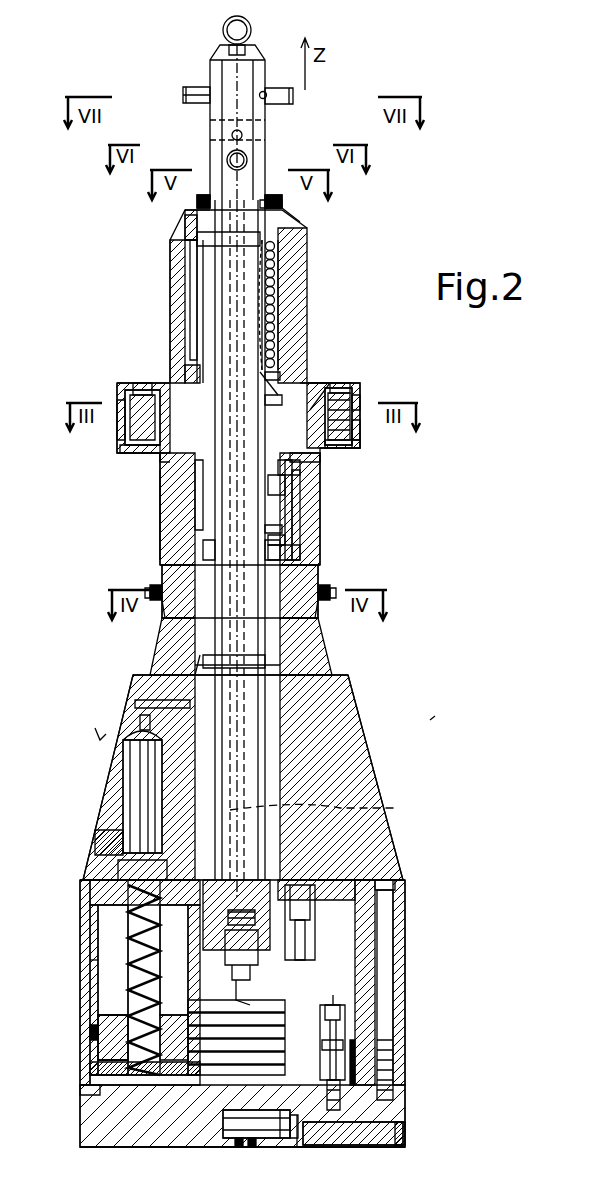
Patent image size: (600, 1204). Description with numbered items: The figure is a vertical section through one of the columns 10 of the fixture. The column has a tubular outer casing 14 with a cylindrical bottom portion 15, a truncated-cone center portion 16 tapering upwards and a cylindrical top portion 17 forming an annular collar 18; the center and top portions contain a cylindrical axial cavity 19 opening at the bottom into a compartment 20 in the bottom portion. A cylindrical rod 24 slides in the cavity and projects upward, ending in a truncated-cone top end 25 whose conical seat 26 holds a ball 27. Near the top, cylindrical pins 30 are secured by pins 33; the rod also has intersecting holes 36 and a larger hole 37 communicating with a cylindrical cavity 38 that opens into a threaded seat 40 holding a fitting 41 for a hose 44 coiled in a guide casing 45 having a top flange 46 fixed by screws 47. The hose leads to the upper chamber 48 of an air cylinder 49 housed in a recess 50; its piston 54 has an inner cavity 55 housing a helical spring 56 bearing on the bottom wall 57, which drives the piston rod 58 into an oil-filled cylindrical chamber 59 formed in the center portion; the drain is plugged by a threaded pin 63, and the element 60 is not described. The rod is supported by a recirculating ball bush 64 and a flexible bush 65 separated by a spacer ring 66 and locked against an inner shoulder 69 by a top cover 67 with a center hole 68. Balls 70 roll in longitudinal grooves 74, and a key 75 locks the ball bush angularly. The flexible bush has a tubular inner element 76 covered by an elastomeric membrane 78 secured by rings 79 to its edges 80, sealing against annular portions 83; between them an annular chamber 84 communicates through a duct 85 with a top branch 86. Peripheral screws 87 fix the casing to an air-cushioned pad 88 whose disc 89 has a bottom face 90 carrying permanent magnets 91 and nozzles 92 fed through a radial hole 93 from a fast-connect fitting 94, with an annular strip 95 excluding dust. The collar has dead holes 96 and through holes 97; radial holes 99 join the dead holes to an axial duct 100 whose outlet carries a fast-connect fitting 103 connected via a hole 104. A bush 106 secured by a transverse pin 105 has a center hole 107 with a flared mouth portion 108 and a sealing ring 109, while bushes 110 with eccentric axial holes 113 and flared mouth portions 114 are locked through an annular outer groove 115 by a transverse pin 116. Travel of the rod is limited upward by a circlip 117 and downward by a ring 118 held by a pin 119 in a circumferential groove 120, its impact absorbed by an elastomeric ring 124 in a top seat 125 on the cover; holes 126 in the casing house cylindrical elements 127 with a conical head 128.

The column 10 is at (448, 718).
The tubular outer casing 14 is at (100, 745).
The bottom portion 15 is at (345, 1040).
The center portion 16 is at (338, 760).
The top portion 17 is at (170, 512).
The annular collar 18 is at (364, 459).
The axial cavity 19 is at (300, 655).
The compartment 20 is at (393, 1030).
The cylindrical rod 24 is at (255, 740).
The truncated-cone top end 25 is at (258, 57).
The conical seat 26 is at (235, 44).
The ball 27 is at (250, 26).
The cylindrical pins 30 is at (192, 90).
The pins 33 is at (266, 93).
The intersecting holes 36 is at (243, 135).
The larger-diameter hole 37 is at (228, 155).
The cylindrical cavity 38 is at (396, 808).
The threaded seat 40 is at (230, 1138).
The fitting 41 is at (80, 885).
The hose 44 is at (90, 1115).
The cylindrical guide casing 45 is at (345, 1055).
The top flange 46 is at (396, 884).
The screws 47 is at (395, 895).
The upper chamber 48 is at (98, 920).
The air cylinder 49 is at (92, 965).
The recess 50 is at (90, 1032).
The piston 54 is at (100, 1025).
The inner cavity 55 is at (100, 1066).
The helical spring 56 is at (157, 990).
The bottom wall 57 is at (95, 1080).
The piston rod 58 is at (128, 940).
The oil-filled cylindrical chamber 59 is at (125, 772).
The plug 60 is at (95, 838).
The threaded pin 63 is at (118, 860).
The recirculating ball bush 64 is at (292, 283).
The flexible bush 65 is at (300, 515).
The spacer ring 66 is at (284, 392).
The top cover 67 is at (185, 225).
The center hole 68 is at (258, 240).
The inner shoulder 69 is at (300, 552).
The balls 70 is at (264, 305).
The longitudinal grooves 74 is at (276, 290).
The key 75 is at (190, 305).
The tubular inner element 76 is at (292, 500).
The elastomeric membrane 78 is at (200, 492).
The rings 79 is at (285, 400).
The edges 80 is at (282, 376).
The annular portions 83 is at (203, 548).
The annular chamber 84 is at (287, 487).
The duct 85 is at (195, 660).
The top branch 86 is at (176, 383).
The peripheral screws 87 is at (340, 1030).
The air-cushioned pad 88 is at (300, 1148).
The disc 89 is at (85, 1090).
The bottom face 90 is at (154, 1155).
The permanent magnets 91 is at (395, 1140).
The nozzles 92 is at (246, 1147).
The radial hole 93 is at (292, 1140).
The fast-connect fitting 94 is at (343, 1070).
The annular strip 95 is at (406, 1130).
The dead axial holes 96 is at (360, 425).
The through holes 97 is at (162, 460).
The radial holes 99 is at (302, 467).
The axial duct 100 is at (270, 660).
The fast-connect fitting 103 is at (315, 915).
The hole 104 is at (305, 945).
The transverse pin 105 is at (355, 400).
The bush 106 is at (345, 390).
The center hole 107 is at (360, 443).
The flared mouth portion 108 is at (322, 395).
The sealing ring 109 is at (358, 400).
The bushes 110 is at (120, 390).
The eccentric axial holes 113 is at (140, 385).
The flared mouth portions 114 is at (140, 392).
The annular outer groove 115 is at (125, 450).
The transverse pin 116 is at (118, 405).
The circlip 117 is at (258, 960).
The ring 118 is at (282, 188).
The pin 119 is at (190, 212).
The circumferential groove 120 is at (198, 202).
The elastomeric ring 124 is at (285, 206).
The top seat 125 is at (290, 214).
The holes 126 is at (164, 605).
The cylindrical elements 127 is at (150, 590).
The conical head 128 is at (147, 597).